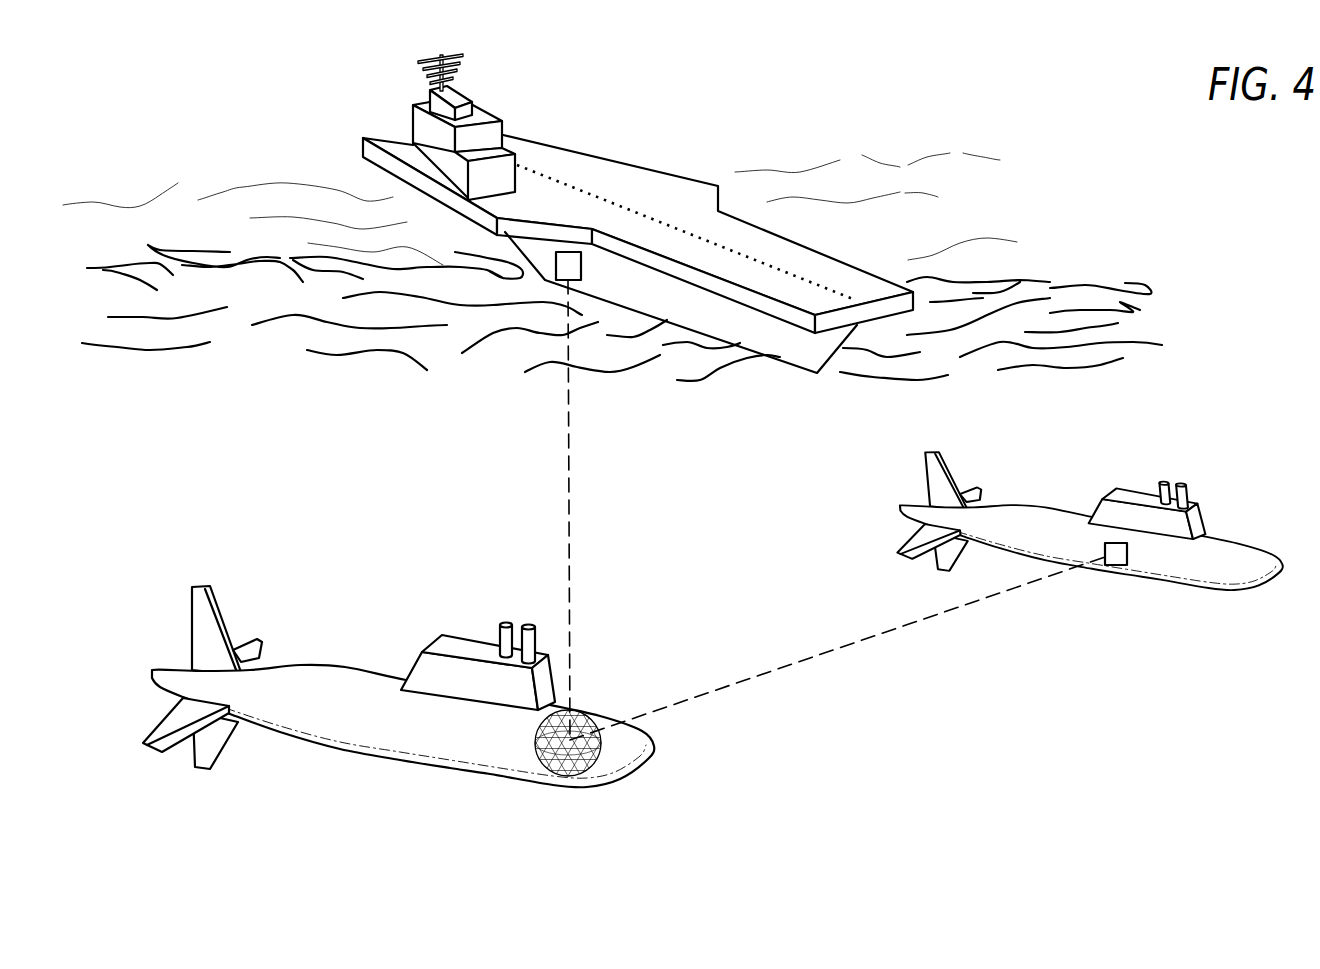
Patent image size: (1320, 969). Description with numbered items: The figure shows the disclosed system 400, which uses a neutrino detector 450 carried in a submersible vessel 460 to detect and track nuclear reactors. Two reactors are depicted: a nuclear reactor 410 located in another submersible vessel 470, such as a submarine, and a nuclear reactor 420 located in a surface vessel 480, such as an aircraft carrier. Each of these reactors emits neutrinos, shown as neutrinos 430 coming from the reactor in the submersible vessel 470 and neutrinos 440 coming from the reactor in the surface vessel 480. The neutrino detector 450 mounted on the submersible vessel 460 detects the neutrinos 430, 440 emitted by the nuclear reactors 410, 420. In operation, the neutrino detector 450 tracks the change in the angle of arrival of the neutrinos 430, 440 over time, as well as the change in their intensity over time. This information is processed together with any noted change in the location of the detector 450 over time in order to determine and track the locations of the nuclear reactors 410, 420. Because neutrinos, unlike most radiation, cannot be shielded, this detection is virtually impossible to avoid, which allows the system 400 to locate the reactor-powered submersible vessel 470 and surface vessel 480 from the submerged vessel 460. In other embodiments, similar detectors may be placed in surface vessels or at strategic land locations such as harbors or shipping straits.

The system 400 is at (677, 448).
The nuclear reactor 410 is at (1105, 553).
The nuclear reactor 420 is at (581, 266).
The neutrinos 430 is at (848, 645).
The neutrinos 440 is at (570, 537).
The neutrino detector 450 is at (587, 708).
The submersible vessel 460 is at (435, 714).
The submersible vessel 470 is at (1153, 443).
The surface vessel 480 is at (707, 162).